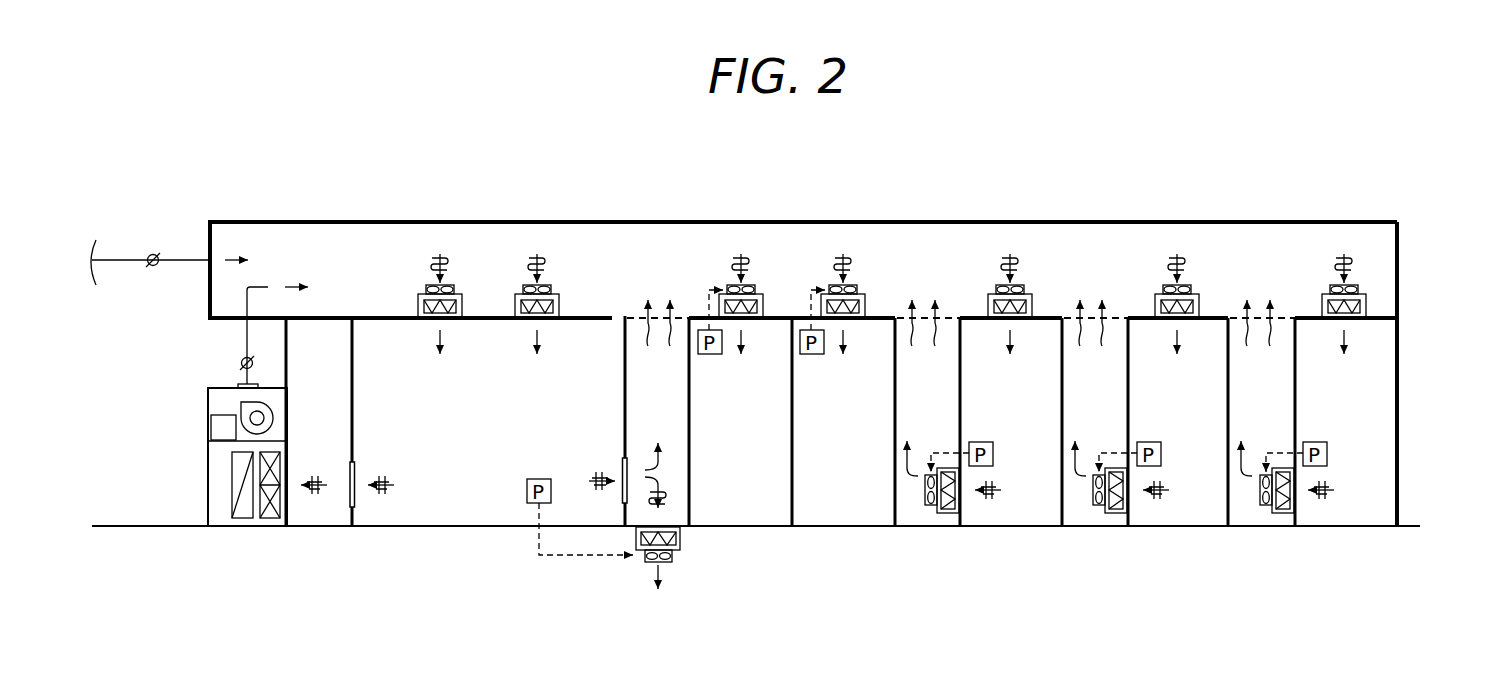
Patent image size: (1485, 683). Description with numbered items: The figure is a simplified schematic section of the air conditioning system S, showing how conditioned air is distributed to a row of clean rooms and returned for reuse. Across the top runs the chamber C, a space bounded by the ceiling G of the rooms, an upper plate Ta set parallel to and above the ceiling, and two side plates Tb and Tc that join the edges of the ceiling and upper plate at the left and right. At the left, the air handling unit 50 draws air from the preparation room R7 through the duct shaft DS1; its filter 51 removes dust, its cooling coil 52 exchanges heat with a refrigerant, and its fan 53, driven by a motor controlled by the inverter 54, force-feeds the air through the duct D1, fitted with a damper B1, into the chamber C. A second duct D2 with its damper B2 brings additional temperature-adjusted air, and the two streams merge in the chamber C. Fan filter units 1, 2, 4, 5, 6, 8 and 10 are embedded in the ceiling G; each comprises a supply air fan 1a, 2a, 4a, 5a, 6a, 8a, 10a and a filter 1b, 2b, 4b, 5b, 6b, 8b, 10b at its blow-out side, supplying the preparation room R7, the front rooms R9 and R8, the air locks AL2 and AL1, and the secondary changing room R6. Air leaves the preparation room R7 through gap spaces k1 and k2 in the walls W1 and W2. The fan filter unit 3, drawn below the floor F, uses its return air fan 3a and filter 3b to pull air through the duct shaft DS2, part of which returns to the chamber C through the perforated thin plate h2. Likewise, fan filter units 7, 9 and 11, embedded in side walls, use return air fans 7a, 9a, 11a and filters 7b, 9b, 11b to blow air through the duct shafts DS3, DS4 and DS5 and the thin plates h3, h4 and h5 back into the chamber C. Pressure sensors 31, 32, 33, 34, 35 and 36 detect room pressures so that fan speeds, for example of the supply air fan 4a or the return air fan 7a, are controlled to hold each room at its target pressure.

The air conditioning system S is at (1178, 168).
The upper plate Ta is at (294, 222).
The side plate Tb is at (208, 238).
The side plate Tc is at (1399, 243).
The chamber C is at (358, 291).
The ceiling G is at (697, 317).
The duct D2 is at (134, 260).
The damper B2 is at (150, 266).
The duct D1 is at (247, 336).
The damper B1 is at (241, 362).
The air handling unit 50 is at (190, 479).
The filter 51 is at (268, 519).
The cooling coil 52 is at (243, 519).
The fan 53 is at (238, 402).
The inverter 54 is at (210, 428).
The wall W1 is at (353, 424).
The gap space k1 is at (355, 471).
The wall W2 is at (623, 421).
The gap space k2 is at (622, 469).
The duct shaft DS1 is at (345, 437).
The preparation room R7 is at (510, 437).
The duct shaft DS2 is at (683, 437).
The front room R9 is at (757, 437).
The front room R8 is at (862, 437).
The duct shaft DS3 is at (955, 437).
The air lock AL2 is at (1050, 437).
The duct shaft DS4 is at (1120, 437).
The air lock AL1 is at (1177, 454).
The duct shaft DS5 is at (1290, 437).
The secondary changing room R6 is at (1362, 437).
The thin plate h2 is at (651, 338).
The thin plate h3 is at (917, 338).
The thin plate h4 is at (1085, 338).
The thin plate h5 is at (1252, 338).
The fan filter unit 1 is at (417, 289).
The supply air fan 1a is at (445, 283).
The filter 1b is at (467, 312).
The fan filter unit 2 is at (560, 289).
The supply air fan 2a is at (532, 283).
The filter 2b is at (564, 312).
The fan filter unit 3 is at (684, 563).
The return air fan 3a is at (667, 563).
The filter 3b is at (682, 540).
The fan filter unit 4 is at (717, 289).
The supply air fan 4a is at (746, 283).
The filter 4b is at (768, 312).
The fan filter unit 5 is at (867, 289).
The supply air fan 5a is at (837, 283).
The filter 5b is at (870, 312).
The fan filter unit 6 is at (986, 289).
The supply air fan 6a is at (1015, 283).
The filter 6b is at (1037, 312).
The fan filter unit 7 is at (933, 515).
The return air fan 7a is at (926, 490).
The filter 7b is at (946, 512).
The fan filter unit 8 is at (1153, 289).
The supply air fan 8a is at (1182, 283).
The filter 8b is at (1204, 312).
The fan filter unit 9 is at (1101, 515).
The return air fan 9a is at (1094, 490).
The filter 9b is at (1114, 512).
The fan filter unit 10 is at (1320, 289).
The supply air fan 10a is at (1349, 283).
The filter 10b is at (1371, 312).
The fan filter unit 11 is at (1268, 515).
The return air fan 11a is at (1261, 490).
The filter 11b is at (1281, 512).
The pressure sensor 31 is at (527, 490).
The pressure sensor 32 is at (709, 355).
The pressure sensor 33 is at (811, 355).
The pressure sensor 34 is at (993, 454).
The pressure sensor 35 is at (1161, 454).
The pressure sensor 36 is at (1327, 454).
The floor F is at (429, 521).